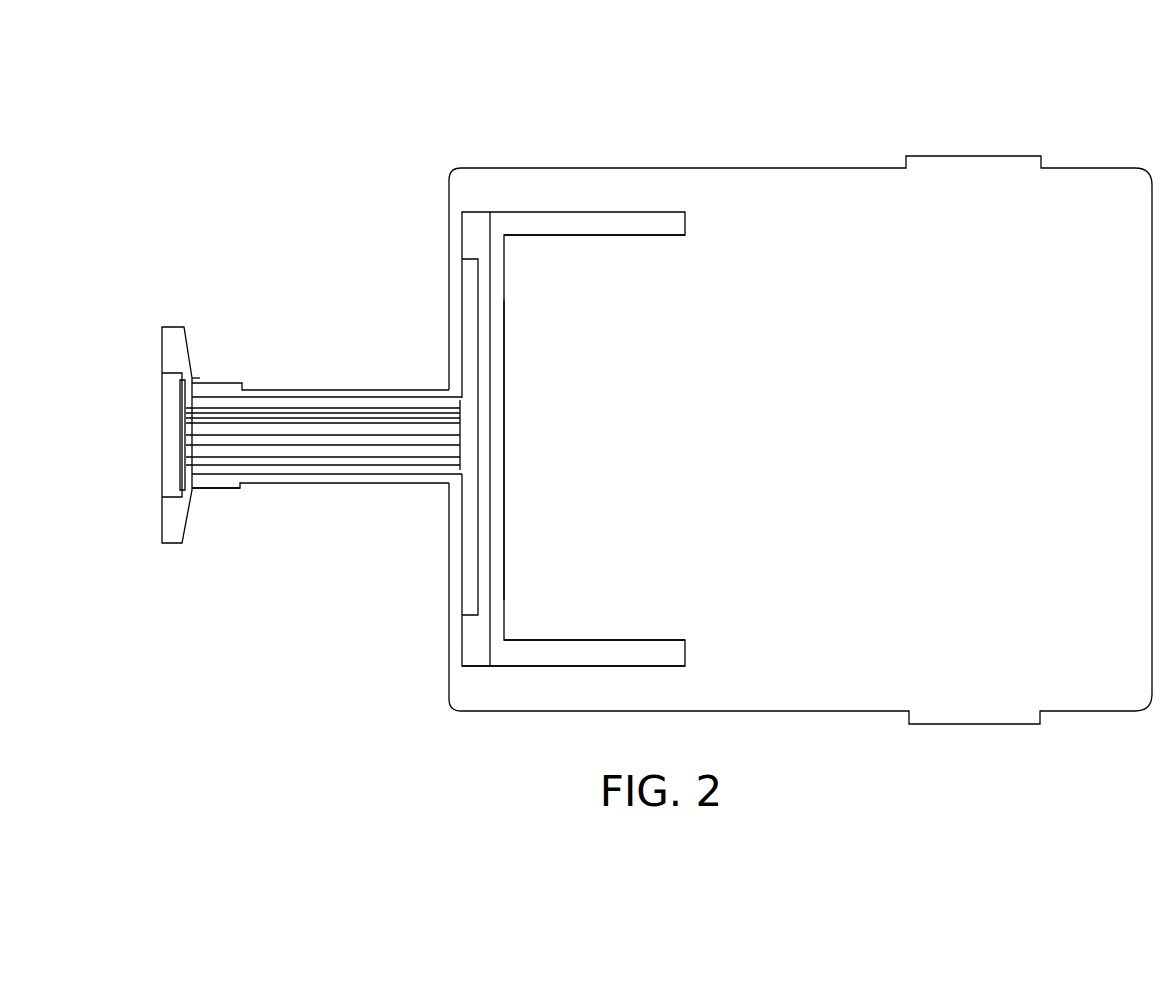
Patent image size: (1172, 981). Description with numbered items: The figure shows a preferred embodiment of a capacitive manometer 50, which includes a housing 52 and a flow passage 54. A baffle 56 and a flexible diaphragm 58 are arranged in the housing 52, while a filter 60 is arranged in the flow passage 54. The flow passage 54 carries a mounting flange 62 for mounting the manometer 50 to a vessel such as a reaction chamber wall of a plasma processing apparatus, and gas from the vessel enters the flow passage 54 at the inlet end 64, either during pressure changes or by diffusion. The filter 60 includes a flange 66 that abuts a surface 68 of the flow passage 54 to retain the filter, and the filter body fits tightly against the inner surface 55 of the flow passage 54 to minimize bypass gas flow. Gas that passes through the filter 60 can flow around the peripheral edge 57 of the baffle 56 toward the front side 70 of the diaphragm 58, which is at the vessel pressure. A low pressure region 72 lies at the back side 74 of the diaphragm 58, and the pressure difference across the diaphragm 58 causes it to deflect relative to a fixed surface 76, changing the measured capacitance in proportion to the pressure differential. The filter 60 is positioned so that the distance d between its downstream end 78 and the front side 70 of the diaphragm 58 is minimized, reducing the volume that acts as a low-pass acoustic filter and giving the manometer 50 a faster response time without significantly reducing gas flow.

The capacitive manometer 50 is at (838, 90).
The housing 52 is at (1092, 168).
The flow passage 54 is at (242, 383).
The inner surface 55 is at (329, 395).
The baffle 56 is at (478, 563).
The peripheral edge 57 is at (462, 259).
The diaphragm 58 is at (495, 218).
The filter 60 is at (230, 490).
The mounting flange 62 is at (172, 327).
The inlet end 64 is at (162, 413).
The flange 66 is at (180, 470).
The surface 68 is at (192, 378).
The front side 70 is at (490, 637).
The low pressure region 72 is at (502, 504).
The back side 74 is at (490, 618).
The surface 76 is at (507, 293).
The downstream end 78 is at (462, 425).
The distance d is at (462, 425).